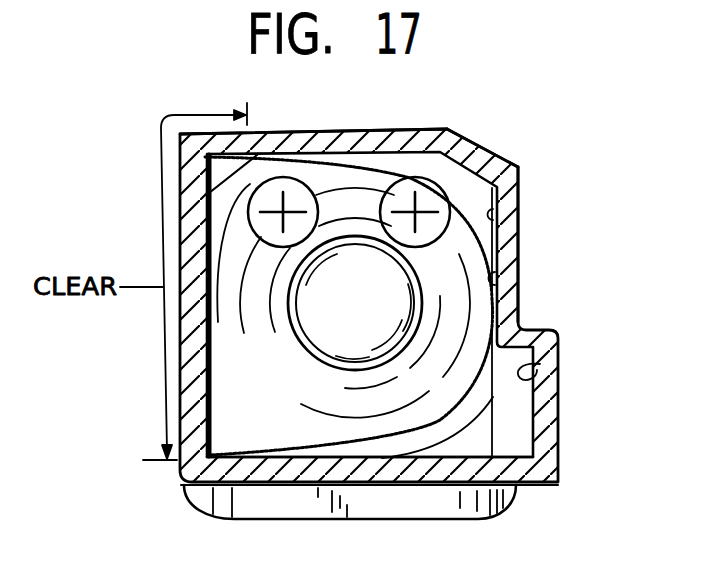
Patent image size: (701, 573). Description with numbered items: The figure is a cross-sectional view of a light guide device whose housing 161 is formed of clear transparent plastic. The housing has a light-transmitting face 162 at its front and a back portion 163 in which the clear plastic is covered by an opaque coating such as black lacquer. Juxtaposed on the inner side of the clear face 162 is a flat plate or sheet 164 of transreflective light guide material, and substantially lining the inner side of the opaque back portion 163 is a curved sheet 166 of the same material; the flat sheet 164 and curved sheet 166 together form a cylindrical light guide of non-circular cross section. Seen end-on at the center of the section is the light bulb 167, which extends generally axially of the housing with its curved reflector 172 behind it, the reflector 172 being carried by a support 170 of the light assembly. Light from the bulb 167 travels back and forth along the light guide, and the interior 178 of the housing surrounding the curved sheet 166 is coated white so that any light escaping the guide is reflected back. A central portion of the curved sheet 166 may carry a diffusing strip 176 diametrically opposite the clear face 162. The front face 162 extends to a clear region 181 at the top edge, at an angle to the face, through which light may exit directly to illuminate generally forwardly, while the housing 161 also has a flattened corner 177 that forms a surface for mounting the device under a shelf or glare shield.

The housing 161 is at (328, 138).
The light-transmitting face 162 is at (181, 328).
The back portion 163 is at (508, 303).
The flat plate or sheet 164 is at (383, 130).
The curved sheet 166 is at (294, 444).
The light bulb 167 is at (363, 301).
The support 170 is at (480, 433).
The curved reflector 172 is at (397, 400).
The diffusing strip 176 is at (496, 272).
The flattened corner 177 is at (480, 150).
The interior of the housing 178 is at (493, 208).
The clear region 181 is at (198, 135).